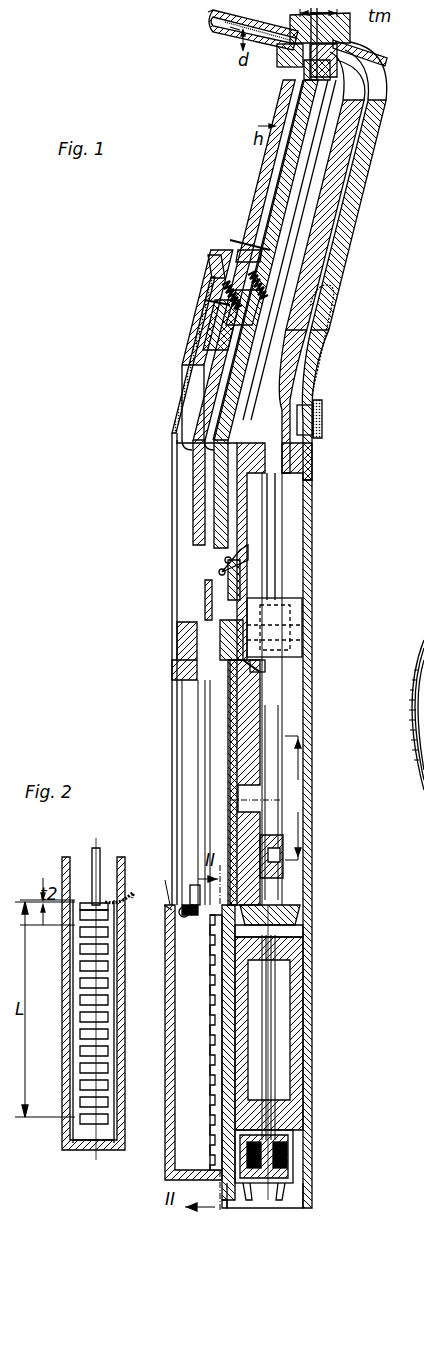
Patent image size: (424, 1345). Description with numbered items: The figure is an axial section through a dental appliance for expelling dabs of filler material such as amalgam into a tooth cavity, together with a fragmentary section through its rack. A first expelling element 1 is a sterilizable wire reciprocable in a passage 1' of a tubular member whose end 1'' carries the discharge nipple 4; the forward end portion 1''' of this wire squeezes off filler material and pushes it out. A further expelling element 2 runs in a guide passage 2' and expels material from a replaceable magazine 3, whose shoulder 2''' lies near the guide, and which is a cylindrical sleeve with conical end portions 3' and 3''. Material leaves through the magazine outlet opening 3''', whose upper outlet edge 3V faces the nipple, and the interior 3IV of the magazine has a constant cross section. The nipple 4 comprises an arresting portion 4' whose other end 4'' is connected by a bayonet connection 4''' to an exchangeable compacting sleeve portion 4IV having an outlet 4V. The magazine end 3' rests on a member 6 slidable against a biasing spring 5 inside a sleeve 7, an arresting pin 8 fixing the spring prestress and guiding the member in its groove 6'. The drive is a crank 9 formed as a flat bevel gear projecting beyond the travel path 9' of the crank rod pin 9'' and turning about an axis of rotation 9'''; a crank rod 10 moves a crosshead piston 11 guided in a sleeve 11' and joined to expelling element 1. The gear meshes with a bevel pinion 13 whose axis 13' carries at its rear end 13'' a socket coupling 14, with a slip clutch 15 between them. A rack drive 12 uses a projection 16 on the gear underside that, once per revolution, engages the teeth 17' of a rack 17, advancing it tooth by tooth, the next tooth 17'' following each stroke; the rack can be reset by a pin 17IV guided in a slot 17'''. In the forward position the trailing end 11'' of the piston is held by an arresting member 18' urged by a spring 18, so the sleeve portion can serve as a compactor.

In FIG. 1, the expelling element 1 is at (329, 262).
In FIG. 1, the passage 1' is at (344, 261).
In FIG. 1, the end of tubular member 1'' is at (345, 29).
In FIG. 1, the forward end portion of expelling element 1''' is at (375, 55).
In FIG. 1, the further expelling element 2 is at (188, 350).
In FIG. 1, the guide passage 2' is at (177, 478).
In FIG. 1, the tube shoulder 2''' is at (180, 305).
In FIG. 1, the replaceable magazine 3 is at (244, 312).
In FIG. 1, the end portion of magazine 3' is at (220, 246).
In FIG. 1, the end portion of magazine 3'' is at (286, 55).
In FIG. 1, the magazine outlet opening 3''' is at (292, 90).
In FIG. 1, the interior of magazine 3IV is at (270, 186).
In FIG. 1, the upper outlet edge of magazine 3V is at (310, 115).
In FIG. 1, the discharge nipple 4 is at (227, 50).
In FIG. 1, the arresting portion 4' is at (324, 77).
In FIG. 1, the other end of arresting portion 4'' is at (260, 71).
In FIG. 1, the crossbar bore 4''' is at (215, 39).
In FIG. 1, the compacting sleeve portion 4IV is at (235, 28).
In FIG. 1, the outlet of sleeve portion 4V is at (215, 18).
In FIG. 1, the biasing spring 5 is at (200, 340).
In FIG. 1, the member 6 is at (289, 250).
In FIG. 1, the groove 6' is at (218, 264).
In FIG. 1, the sleeve 7 is at (208, 318).
In FIG. 1, the arresting pin 8 is at (210, 283).
In FIG. 1, the crank 9 is at (285, 782).
In FIG. 1, the travel path of crank rod pin 9' is at (308, 802).
In FIG. 1, the crank rod pin 9'' is at (305, 856).
In FIG. 1, the axis of rotation of gear 9''' is at (296, 782).
In FIG. 1, the crank rod 10 is at (262, 670).
In FIG. 1, the crosshead piston 11 is at (304, 627).
In FIG. 1, the sleeve 11' is at (314, 689).
In FIG. 1, the trailing end of crosshead piston 11'' is at (309, 679).
In FIG. 1, the rack drive 12 is at (208, 938).
In FIG. 2, the rack drive 12 is at (95, 905).
In FIG. 1, the bevel pinion 13 is at (293, 913).
In FIG. 1, the axis of pinion 13' is at (306, 1052).
In FIG. 1, the rear end of axis 13'' is at (295, 1131).
In FIG. 1, the socket coupling 14 is at (290, 1195).
In FIG. 1, the slip clutch 15 is at (290, 1150).
In FIG. 1, the projection 16 is at (210, 905).
In FIG. 2, the projection 16 is at (133, 905).
In FIG. 1, the rack 17 is at (193, 1042).
In FIG. 2, the rack 17 is at (81, 1003).
In FIG. 1, the teeth 17' is at (210, 1052).
In FIG. 2, the teeth 17' is at (113, 1085).
In FIG. 1, the next tooth 17'' is at (293, 1027).
In FIG. 2, the next tooth 17'' is at (72, 951).
In FIG. 1, the plunger 17''' is at (172, 792).
In FIG. 1, the pin 17IV is at (165, 905).
In FIG. 1, the spring 18 is at (182, 590).
In FIG. 1, the arresting member 18' is at (176, 566).